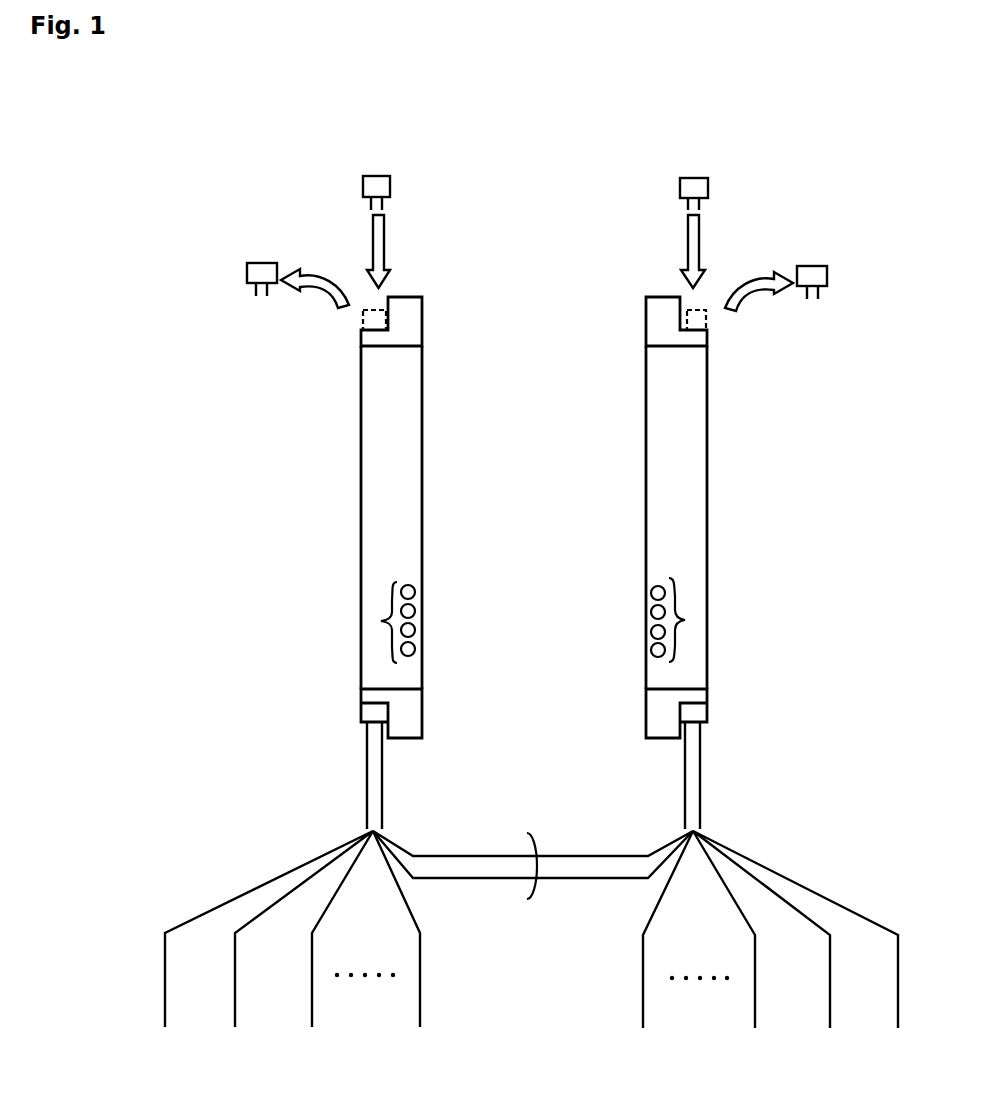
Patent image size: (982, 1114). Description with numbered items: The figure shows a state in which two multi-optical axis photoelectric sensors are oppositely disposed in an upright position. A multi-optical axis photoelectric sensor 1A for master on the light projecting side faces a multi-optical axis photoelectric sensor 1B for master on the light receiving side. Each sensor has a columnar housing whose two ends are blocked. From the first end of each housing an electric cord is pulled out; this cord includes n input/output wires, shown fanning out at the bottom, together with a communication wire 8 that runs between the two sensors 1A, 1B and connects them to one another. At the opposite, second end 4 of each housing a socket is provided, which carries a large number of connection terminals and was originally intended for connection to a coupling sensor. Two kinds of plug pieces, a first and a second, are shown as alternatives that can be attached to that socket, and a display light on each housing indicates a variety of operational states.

The multi-optical axis photoelectric sensor for master on the light projecting side 1A is at (298, 418).
The multi-optical axis photoelectric sensor for master on the light receiving side 1B is at (835, 405).
The second end 4 is at (710, 335).
The communication wire 8 is at (523, 832).